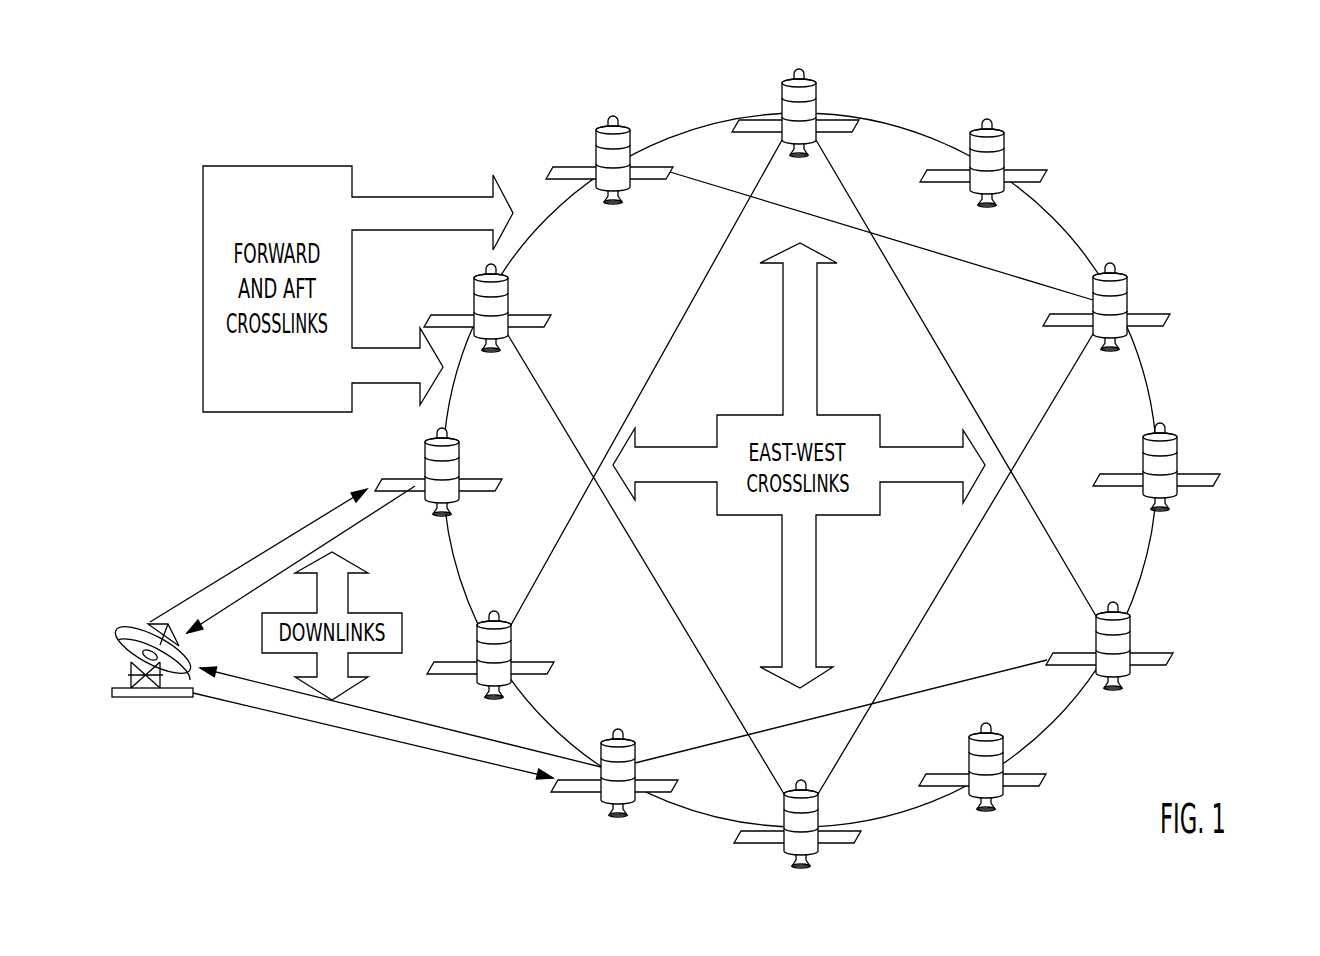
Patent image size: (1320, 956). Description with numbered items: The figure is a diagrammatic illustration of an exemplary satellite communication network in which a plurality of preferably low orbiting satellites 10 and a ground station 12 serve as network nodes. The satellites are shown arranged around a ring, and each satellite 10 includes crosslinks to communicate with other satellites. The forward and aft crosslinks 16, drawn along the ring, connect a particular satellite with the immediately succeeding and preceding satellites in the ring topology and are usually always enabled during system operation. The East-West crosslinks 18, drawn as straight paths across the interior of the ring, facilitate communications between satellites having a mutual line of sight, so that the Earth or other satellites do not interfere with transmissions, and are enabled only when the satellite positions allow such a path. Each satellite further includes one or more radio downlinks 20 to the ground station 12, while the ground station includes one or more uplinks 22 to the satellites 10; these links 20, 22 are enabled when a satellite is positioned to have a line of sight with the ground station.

The satellite 10 is at (817, 90).
The ground station 12 is at (122, 625).
The forward and aft crosslinks 16 is at (700, 812).
The East-West crosslinks 18 is at (627, 421).
The radio downlink 20 is at (362, 520).
The uplink 22 is at (295, 532).